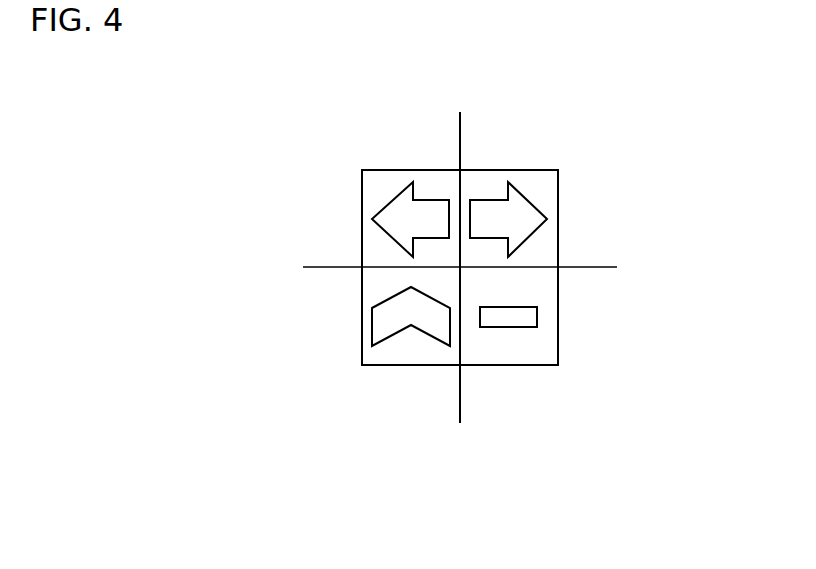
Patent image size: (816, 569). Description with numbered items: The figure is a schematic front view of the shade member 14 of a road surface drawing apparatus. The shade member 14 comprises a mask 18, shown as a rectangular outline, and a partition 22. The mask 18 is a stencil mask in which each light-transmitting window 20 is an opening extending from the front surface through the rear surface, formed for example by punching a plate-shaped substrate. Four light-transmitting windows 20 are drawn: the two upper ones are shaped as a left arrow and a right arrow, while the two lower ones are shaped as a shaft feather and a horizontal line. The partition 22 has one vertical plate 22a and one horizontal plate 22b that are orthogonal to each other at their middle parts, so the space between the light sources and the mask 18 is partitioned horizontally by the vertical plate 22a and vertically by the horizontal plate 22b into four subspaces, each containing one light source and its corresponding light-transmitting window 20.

The shade member 14 is at (475, 516).
The mask 18 is at (533, 353).
The light-transmitting window 20 is at (493, 198).
The partition 22 is at (513, 246).
The vertical plate 22a is at (460, 137).
The horizontal plate 22b is at (585, 267).